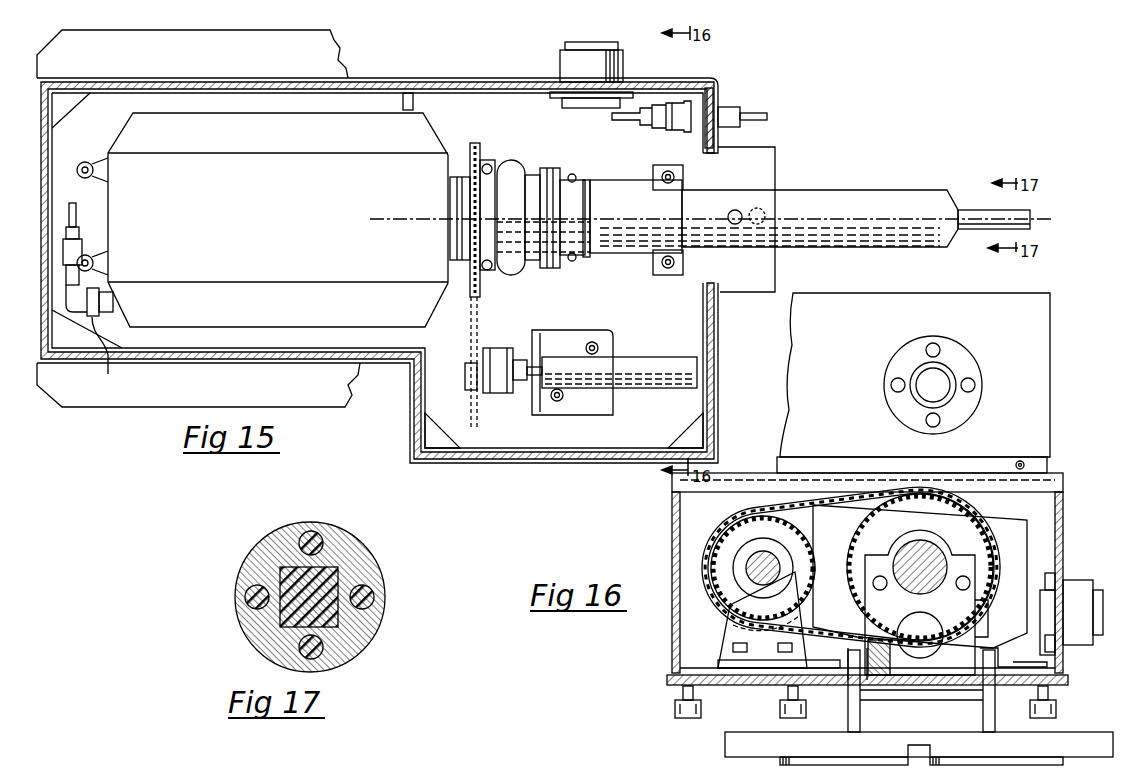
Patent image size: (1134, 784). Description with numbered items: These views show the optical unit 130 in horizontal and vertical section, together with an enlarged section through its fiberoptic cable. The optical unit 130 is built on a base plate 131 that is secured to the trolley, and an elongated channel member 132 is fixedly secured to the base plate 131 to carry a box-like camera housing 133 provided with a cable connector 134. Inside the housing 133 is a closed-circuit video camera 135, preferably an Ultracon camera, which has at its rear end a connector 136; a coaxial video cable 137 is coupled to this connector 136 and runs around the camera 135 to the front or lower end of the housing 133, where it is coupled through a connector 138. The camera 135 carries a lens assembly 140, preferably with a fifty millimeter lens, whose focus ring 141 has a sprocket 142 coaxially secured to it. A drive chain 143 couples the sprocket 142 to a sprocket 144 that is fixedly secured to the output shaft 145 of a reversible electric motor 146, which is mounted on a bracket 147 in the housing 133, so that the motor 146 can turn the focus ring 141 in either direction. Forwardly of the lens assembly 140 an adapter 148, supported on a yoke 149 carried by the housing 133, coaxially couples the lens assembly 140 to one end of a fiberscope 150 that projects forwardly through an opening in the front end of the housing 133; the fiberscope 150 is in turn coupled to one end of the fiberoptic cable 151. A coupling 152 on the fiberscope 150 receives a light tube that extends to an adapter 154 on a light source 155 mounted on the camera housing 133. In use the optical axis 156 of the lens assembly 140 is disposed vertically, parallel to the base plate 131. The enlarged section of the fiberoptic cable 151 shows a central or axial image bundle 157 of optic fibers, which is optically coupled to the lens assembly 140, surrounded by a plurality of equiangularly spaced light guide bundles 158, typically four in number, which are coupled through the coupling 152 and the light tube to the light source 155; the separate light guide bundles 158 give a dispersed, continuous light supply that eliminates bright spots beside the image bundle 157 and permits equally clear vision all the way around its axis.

In FIG. 15, the optical unit 130 is at (856, 79).
In FIG. 15, the base plate 131 is at (145, 408).
In FIG. 16, the base plate 131 is at (725, 746).
In FIG. 16, the elongated channel member 132 is at (848, 718).
In FIG. 15, the camera housing 133 is at (410, 430).
In FIG. 16, the camera housing 133 is at (668, 545).
In FIG. 15, the cable connector 134 is at (560, 66).
In FIG. 16, the cable connector 134 is at (1085, 583).
In FIG. 15, the closed-circuit video camera 135 is at (272, 118).
In FIG. 16, the closed-circuit video camera 135 is at (1030, 552).
In FIG. 15, the connector 136 is at (110, 356).
In FIG. 15, the coaxial video cable 137 is at (80, 211).
In FIG. 15, the connector 138 is at (720, 108).
In FIG. 15, the lens assembly 140 is at (544, 286).
In FIG. 15, the focus ring 141 is at (452, 178).
In FIG. 15, the sprocket 142 is at (482, 152).
In FIG. 16, the sprocket 142 is at (956, 505).
In FIG. 15, the drive chain 143 is at (469, 324).
In FIG. 16, the drive chain 143 is at (826, 505).
In FIG. 16, the sprocket 144 is at (712, 540).
In FIG. 15, the output shaft 145 is at (464, 376).
In FIG. 16, the output shaft 145 is at (748, 570).
In FIG. 15, the reversible electric motor 146 is at (672, 357).
In FIG. 16, the reversible electric motor 146 is at (740, 590).
In FIG. 15, the bracket 147 is at (598, 416).
In FIG. 16, the bracket 147 is at (718, 637).
In FIG. 15, the adapter 148 is at (636, 183).
In FIG. 15, the yoke 149 is at (660, 275).
In FIG. 16, the yoke 149 is at (968, 610).
In FIG. 15, the fiberscope 150 is at (835, 190).
In FIG. 16, the fiberscope 150 is at (910, 550).
In FIG. 15, the fiberoptic cable 151 is at (972, 210).
In FIG. 17, the fiberoptic cable 151 is at (262, 553).
In FIG. 15, the coupling 152 is at (755, 236).
In FIG. 15, the adapter 154 is at (957, 378).
In FIG. 15, the light source 155 is at (1004, 293).
In FIG. 15, the optical axis 156 is at (1050, 215).
In FIG. 17, the image bundle 157 is at (342, 572).
In FIG. 17, the light guide bundles 158 is at (362, 622).